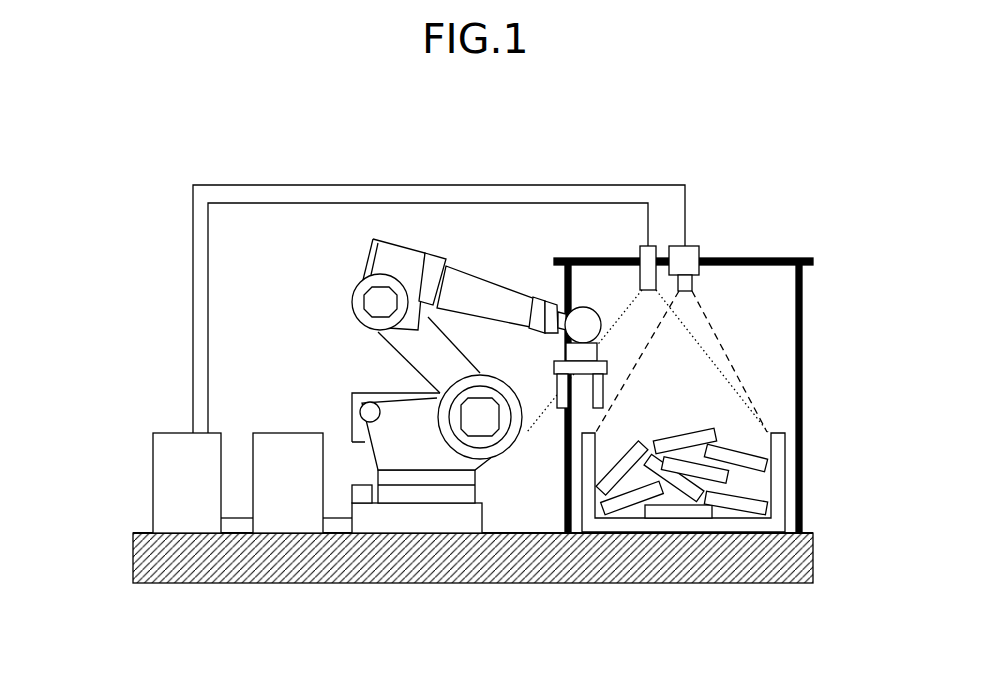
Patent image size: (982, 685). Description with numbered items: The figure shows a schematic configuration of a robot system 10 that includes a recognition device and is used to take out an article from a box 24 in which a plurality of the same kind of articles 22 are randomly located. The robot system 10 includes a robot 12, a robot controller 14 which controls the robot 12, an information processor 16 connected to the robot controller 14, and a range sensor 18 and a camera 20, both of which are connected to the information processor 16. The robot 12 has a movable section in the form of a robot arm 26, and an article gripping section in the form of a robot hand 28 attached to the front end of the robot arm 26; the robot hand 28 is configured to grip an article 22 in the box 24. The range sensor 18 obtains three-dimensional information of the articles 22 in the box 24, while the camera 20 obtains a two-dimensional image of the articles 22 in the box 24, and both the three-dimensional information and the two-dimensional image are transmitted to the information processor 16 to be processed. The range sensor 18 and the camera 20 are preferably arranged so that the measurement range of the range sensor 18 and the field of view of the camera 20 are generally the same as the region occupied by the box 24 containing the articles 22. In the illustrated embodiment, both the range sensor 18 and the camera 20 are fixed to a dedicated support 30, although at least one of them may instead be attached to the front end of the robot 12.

The robot system 10 is at (138, 185).
The robot 12 is at (350, 358).
The robot controller 14 is at (283, 433).
The information processor 16 is at (167, 433).
The range sensor 18 is at (640, 250).
The camera 20 is at (700, 253).
The articles 22 is at (738, 455).
The box 24 is at (790, 533).
The robot arm 26 is at (479, 289).
The robot hand 28 is at (553, 367).
The dedicated support 30 is at (793, 258).